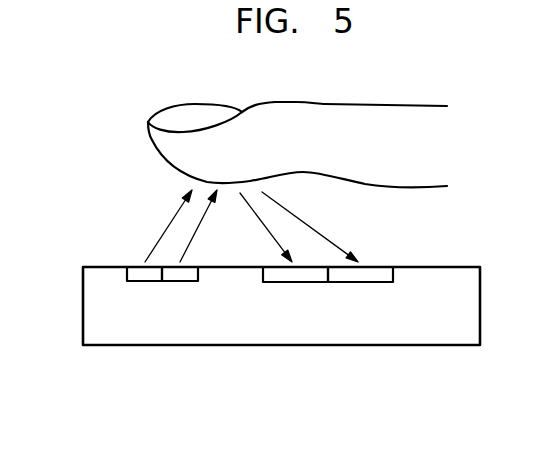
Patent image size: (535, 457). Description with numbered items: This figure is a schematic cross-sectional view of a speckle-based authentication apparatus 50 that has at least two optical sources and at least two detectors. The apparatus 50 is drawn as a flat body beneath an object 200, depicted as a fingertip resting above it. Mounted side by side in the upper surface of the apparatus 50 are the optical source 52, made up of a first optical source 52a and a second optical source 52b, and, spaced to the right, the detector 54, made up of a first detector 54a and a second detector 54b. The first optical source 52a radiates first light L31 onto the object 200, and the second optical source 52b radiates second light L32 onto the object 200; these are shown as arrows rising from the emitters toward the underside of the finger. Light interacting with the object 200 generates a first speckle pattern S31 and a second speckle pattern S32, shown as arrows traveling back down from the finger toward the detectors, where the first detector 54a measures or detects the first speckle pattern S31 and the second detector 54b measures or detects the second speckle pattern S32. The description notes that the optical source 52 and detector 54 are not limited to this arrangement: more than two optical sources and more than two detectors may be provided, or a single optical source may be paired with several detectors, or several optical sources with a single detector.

The object 200 is at (282, 113).
The speckle-based authentication apparatus 50 is at (92, 315).
The optical source 52 is at (165, 347).
The first optical source 52a is at (143, 278).
The second optical source 52b is at (177, 278).
The detector 54 is at (328, 347).
The first detector 54a is at (298, 278).
The second detector 54b is at (362, 278).
The first light L31 is at (158, 240).
The second light L32 is at (195, 232).
The first speckle pattern S31 is at (265, 225).
The second speckle pattern S32 is at (328, 238).